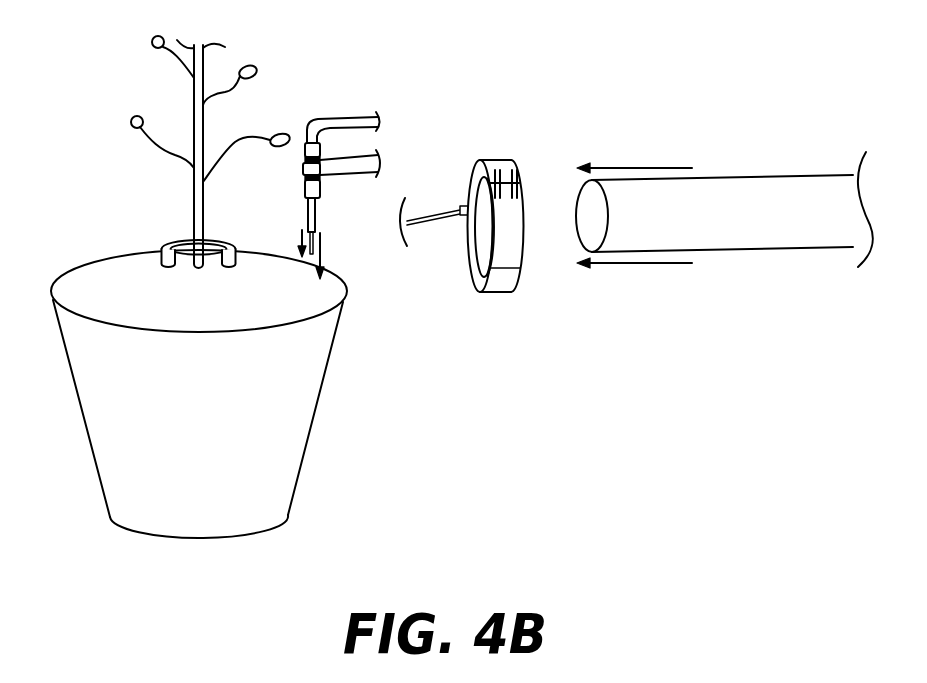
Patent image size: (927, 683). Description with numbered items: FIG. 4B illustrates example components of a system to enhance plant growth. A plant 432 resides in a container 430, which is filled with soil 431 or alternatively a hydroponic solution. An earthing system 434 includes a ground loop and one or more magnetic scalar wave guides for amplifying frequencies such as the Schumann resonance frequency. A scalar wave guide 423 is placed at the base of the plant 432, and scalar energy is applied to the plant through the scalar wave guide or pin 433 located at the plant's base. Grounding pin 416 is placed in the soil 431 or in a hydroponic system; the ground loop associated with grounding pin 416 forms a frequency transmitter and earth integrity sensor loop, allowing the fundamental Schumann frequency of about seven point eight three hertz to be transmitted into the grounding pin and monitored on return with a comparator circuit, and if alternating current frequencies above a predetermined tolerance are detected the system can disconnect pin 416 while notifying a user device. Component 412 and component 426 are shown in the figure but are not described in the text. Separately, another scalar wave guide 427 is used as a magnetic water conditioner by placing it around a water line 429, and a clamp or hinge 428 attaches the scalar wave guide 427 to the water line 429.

The sensor probe 412 is at (317, 217).
The grounding pin 416 is at (327, 246).
The scalar wave guide 423 is at (223, 236).
The cable 426 is at (462, 208).
The scalar wave guide 427 is at (522, 280).
The clamp or hinge 428 is at (520, 188).
The water line 429 is at (707, 250).
The container 430 is at (312, 431).
The soil 431 is at (88, 287).
The plant 432 is at (197, 213).
The scalar wave guide 433 is at (325, 262).
The earthing system 434 is at (323, 148).